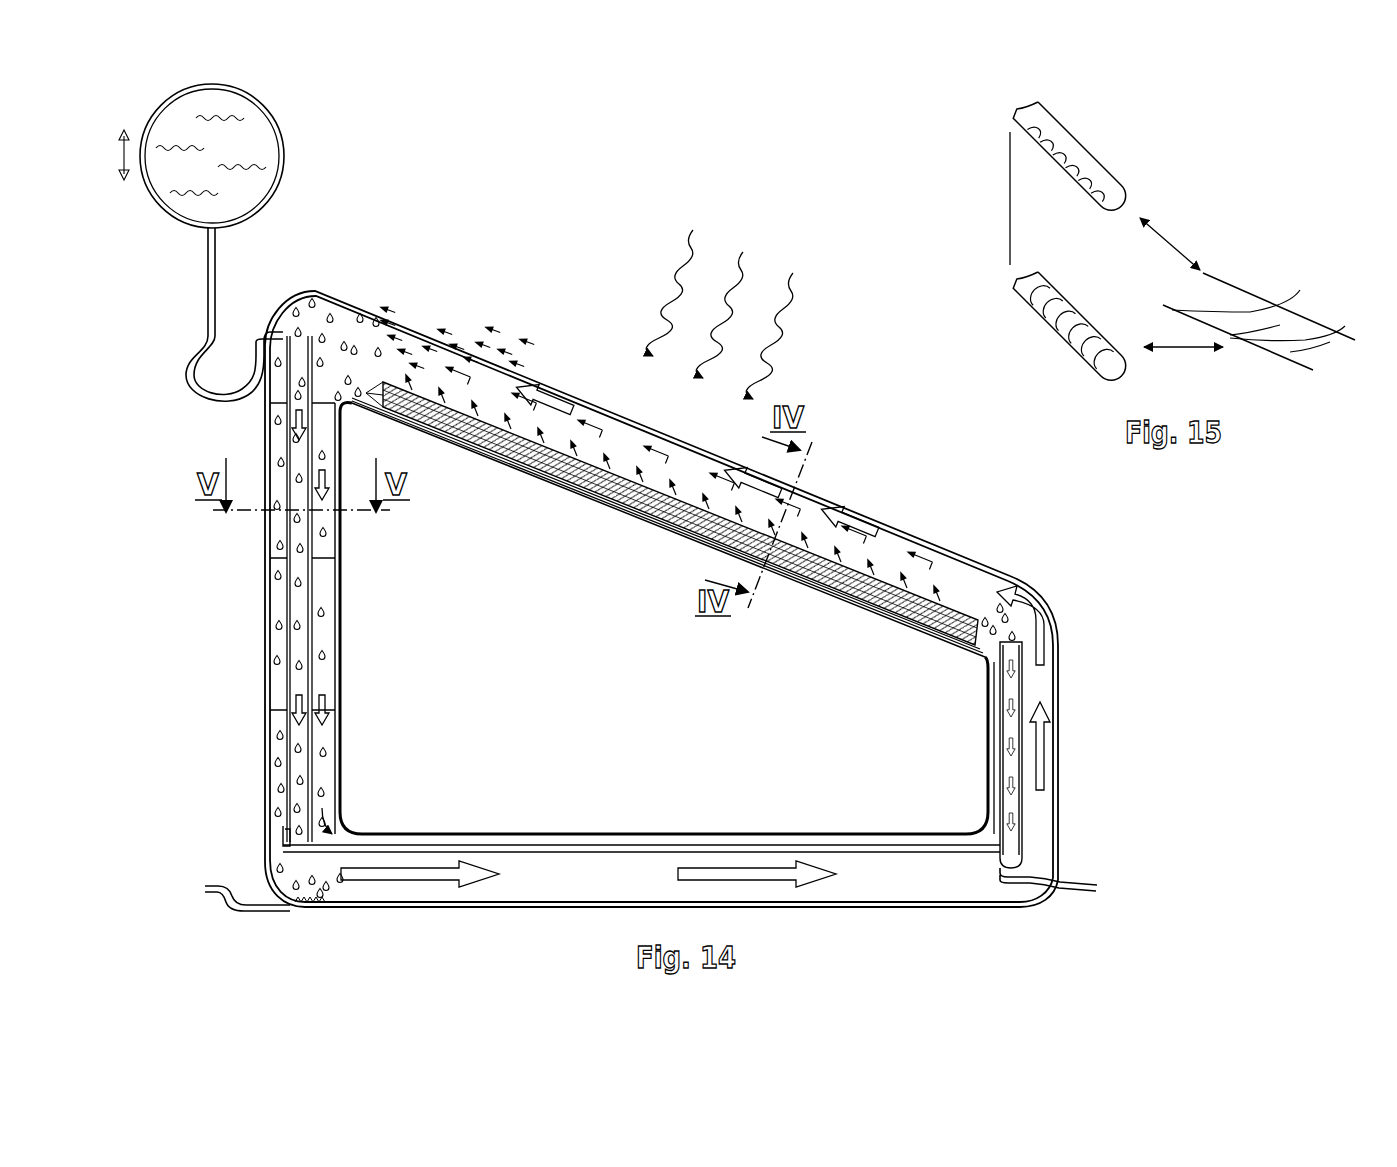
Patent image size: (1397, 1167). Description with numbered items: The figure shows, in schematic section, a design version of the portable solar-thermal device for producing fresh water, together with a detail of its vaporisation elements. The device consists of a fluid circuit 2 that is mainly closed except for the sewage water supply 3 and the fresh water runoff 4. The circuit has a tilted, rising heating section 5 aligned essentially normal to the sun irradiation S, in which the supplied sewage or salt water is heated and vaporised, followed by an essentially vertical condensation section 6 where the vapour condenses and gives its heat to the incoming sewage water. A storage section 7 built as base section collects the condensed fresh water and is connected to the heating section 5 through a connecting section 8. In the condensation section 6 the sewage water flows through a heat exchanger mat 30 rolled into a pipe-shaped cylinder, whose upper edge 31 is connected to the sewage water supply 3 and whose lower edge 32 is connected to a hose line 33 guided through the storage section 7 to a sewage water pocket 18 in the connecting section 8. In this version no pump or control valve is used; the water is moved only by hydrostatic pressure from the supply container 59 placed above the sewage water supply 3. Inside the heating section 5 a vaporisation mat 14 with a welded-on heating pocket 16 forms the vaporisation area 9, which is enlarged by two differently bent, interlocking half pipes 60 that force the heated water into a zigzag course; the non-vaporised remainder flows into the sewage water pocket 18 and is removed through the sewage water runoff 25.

In FIG. 14, the fluid circuit 2 is at (348, 610).
In FIG. 14, the sewage water supply 3 is at (262, 336).
In FIG. 14, the fresh water runoff 4 is at (228, 908).
In FIG. 14, the heating section 5 is at (443, 335).
In FIG. 14, the condensation section 6 is at (265, 603).
In FIG. 14, the storage section 7 is at (637, 834).
In FIG. 14, the connecting section 8 is at (1060, 757).
In FIG. 14, the vaporisation area 9 is at (515, 430).
In FIG. 14, the vaporisation mat 14 is at (548, 478).
In FIG. 14, the heating pocket 16 is at (852, 604).
In FIG. 14, the sewage water pocket 18 is at (1022, 830).
In FIG. 14, the sewage water runoff 25 is at (1085, 882).
In FIG. 14, the heat exchanger mat 30 is at (285, 665).
In FIG. 14, the upper edge 31 is at (318, 335).
In FIG. 14, the lower edge 32 is at (285, 848).
In FIG. 14, the hose line 33 is at (553, 845).
In FIG. 14, the supply container 59 is at (290, 150).
In FIG. 14, the half pipes 60 is at (625, 488).
In FIG. 15, the half pipes 60 is at (1025, 188).
In FIG. 14, the sun irradiation S is at (678, 268).